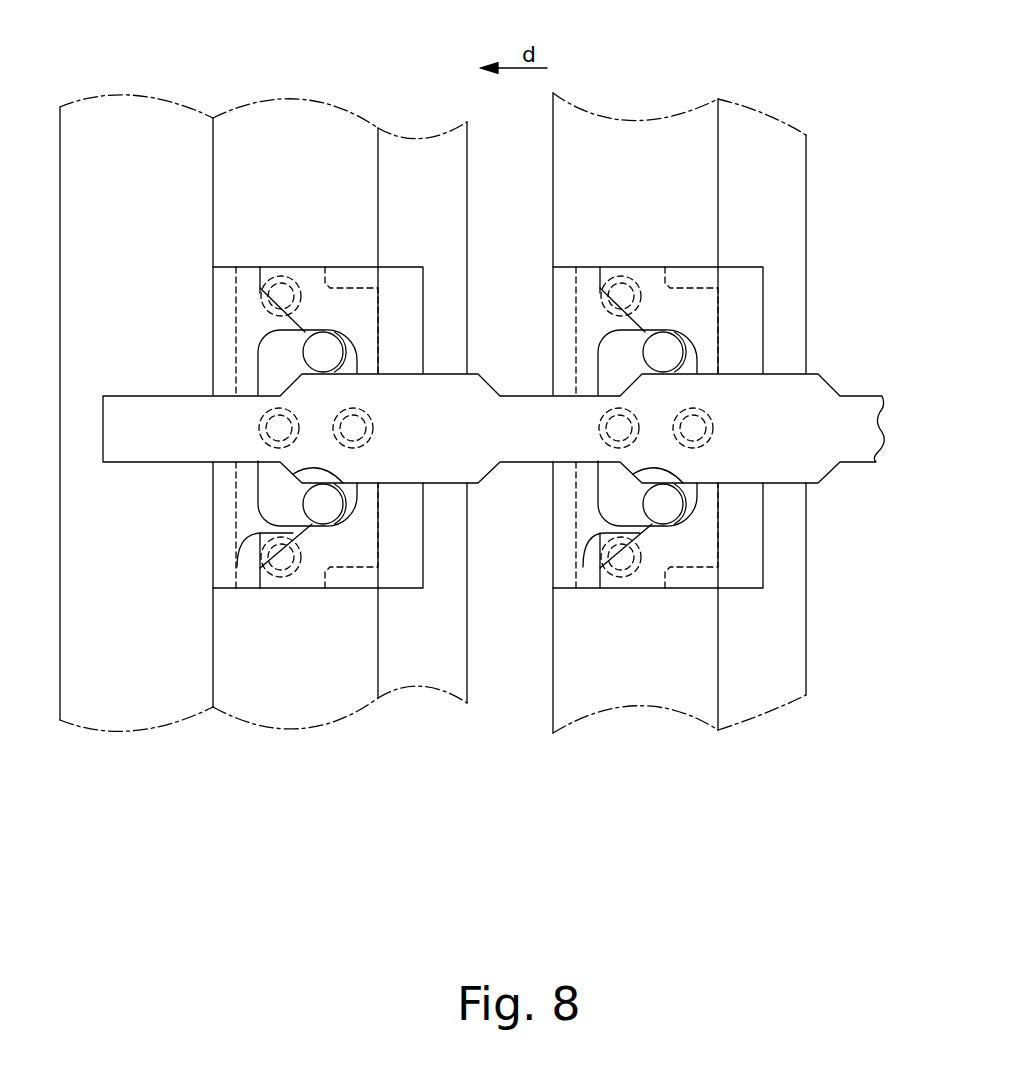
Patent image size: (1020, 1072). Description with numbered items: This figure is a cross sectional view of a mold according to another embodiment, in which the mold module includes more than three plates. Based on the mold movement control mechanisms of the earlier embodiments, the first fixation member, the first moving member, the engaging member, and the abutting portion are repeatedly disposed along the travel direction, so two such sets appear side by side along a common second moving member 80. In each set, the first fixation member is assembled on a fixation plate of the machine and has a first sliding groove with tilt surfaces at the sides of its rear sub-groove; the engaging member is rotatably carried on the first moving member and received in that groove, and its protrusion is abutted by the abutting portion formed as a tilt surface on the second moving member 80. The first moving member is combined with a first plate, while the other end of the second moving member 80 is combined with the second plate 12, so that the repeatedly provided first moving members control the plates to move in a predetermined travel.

The second plate 12 is at (147, 120).
The second moving member 80 is at (443, 465).